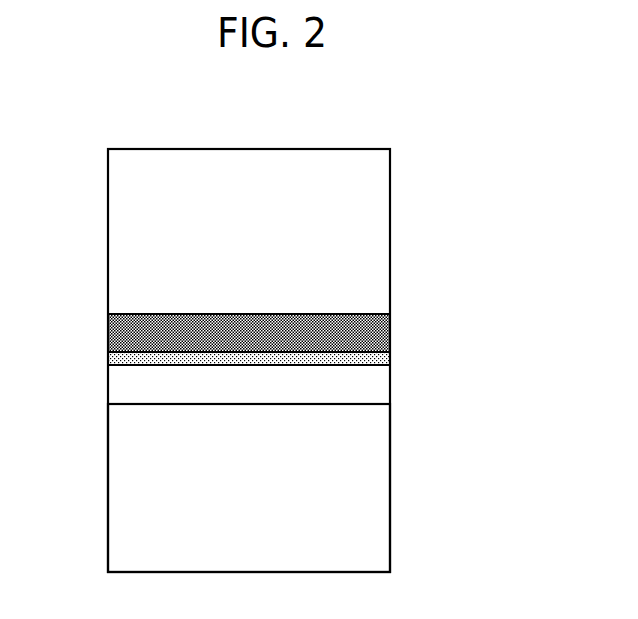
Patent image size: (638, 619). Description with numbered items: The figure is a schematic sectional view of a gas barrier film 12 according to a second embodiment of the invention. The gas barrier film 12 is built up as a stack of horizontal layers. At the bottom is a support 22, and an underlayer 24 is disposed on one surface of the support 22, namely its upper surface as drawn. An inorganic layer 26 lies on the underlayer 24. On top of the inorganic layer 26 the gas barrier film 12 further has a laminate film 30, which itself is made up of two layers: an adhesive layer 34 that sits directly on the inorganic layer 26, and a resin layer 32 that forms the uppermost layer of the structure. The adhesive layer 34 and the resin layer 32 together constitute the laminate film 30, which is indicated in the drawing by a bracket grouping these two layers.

The gas barrier film 12 is at (387, 116).
The support 22 is at (374, 500).
The underlayer 24 is at (374, 388).
The inorganic layer 26 is at (374, 359).
The laminate film 30 is at (312, 250).
The resin layer 32 is at (374, 258).
The adhesive layer 34 is at (284, 332).